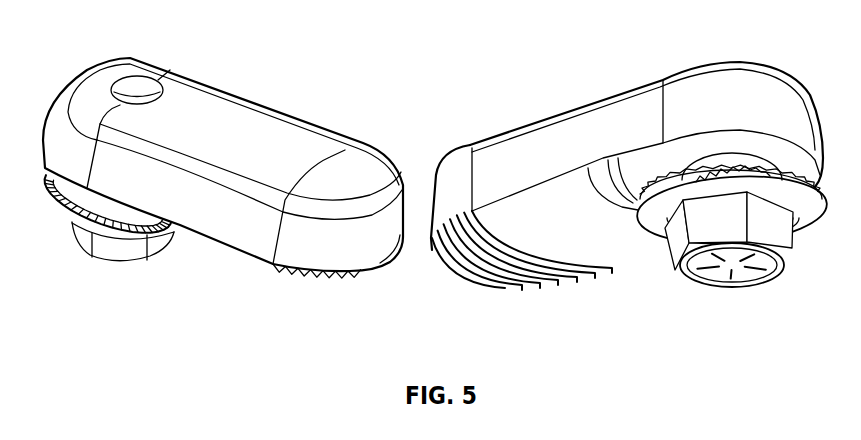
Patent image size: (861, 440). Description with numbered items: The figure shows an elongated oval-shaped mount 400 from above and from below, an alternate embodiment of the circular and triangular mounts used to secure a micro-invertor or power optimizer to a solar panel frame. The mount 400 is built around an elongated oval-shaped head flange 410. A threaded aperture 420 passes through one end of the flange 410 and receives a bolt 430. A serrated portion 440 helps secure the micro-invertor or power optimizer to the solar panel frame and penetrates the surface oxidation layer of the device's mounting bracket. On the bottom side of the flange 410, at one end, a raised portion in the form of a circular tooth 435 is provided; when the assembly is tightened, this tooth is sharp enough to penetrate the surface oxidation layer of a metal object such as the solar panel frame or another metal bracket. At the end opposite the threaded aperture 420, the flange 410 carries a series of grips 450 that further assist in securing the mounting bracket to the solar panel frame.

The elongated oval-shaped mount 400 is at (327, 84).
The head flange 410 is at (238, 92).
The threaded aperture 420 is at (130, 82).
The bolt 430 is at (110, 263).
The circular tooth 435 is at (608, 203).
The serrated portion 440 is at (44, 207).
The grips 450 is at (310, 280).